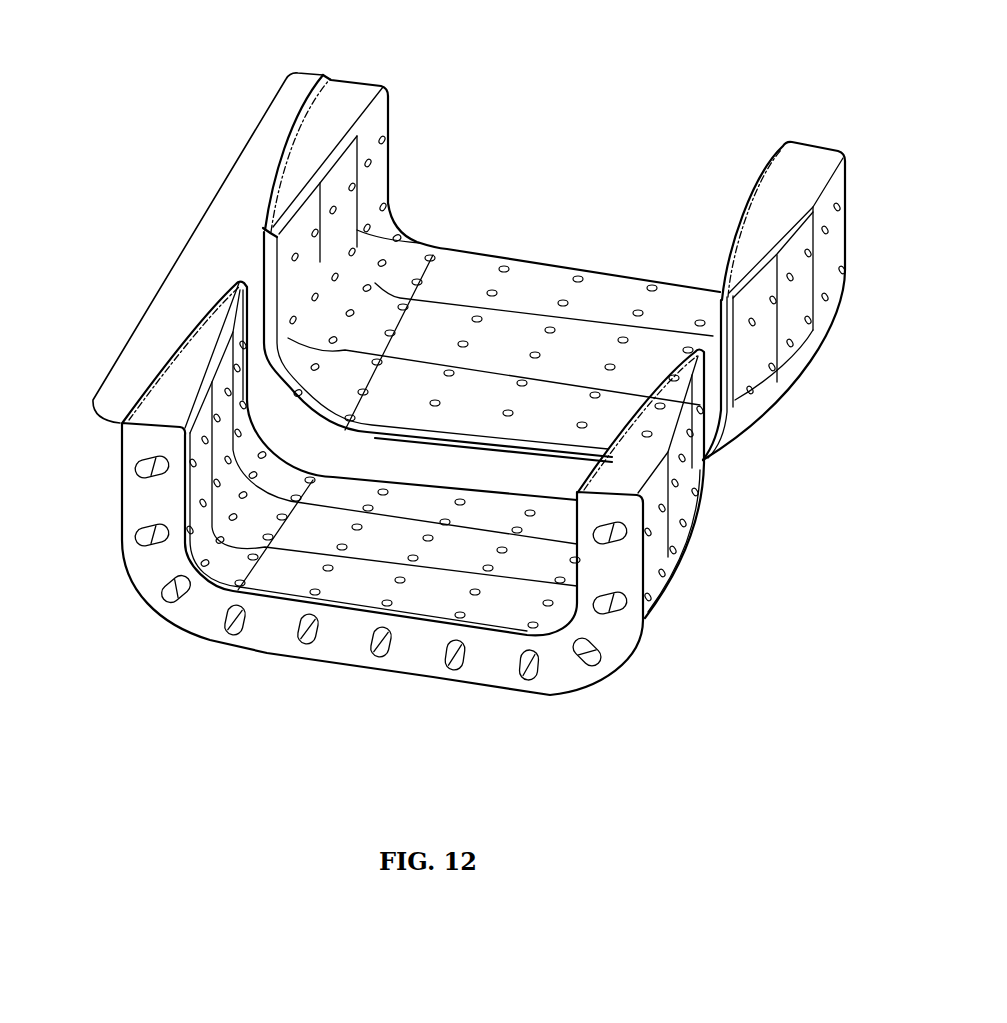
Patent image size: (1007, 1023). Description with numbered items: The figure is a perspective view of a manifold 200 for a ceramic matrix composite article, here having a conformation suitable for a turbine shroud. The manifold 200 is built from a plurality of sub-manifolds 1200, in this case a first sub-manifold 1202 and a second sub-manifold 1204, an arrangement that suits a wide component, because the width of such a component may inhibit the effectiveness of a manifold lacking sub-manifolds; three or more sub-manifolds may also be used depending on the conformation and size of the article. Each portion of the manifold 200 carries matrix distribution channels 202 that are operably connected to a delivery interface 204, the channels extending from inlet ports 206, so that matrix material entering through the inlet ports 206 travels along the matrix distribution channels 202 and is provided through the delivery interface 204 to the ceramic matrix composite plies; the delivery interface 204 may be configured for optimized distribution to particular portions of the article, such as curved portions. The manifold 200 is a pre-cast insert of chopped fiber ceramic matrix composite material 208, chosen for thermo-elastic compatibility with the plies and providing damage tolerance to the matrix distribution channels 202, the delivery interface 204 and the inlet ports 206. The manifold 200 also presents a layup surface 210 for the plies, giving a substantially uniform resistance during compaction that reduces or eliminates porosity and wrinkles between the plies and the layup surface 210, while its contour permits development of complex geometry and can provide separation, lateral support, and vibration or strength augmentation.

The sub-manifold 1200 is at (374, 60).
The manifold 200 is at (181, 240).
The matrix distribution channel 202 is at (300, 628).
The delivery interface 204 is at (360, 527).
The inlet port 206 is at (381, 658).
The chopped fiber ceramic matrix composite material 208 is at (784, 185).
The layup surface 210 is at (553, 277).
The first sub-manifold 1202 is at (437, 705).
The second sub-manifold 1204 is at (630, 252).